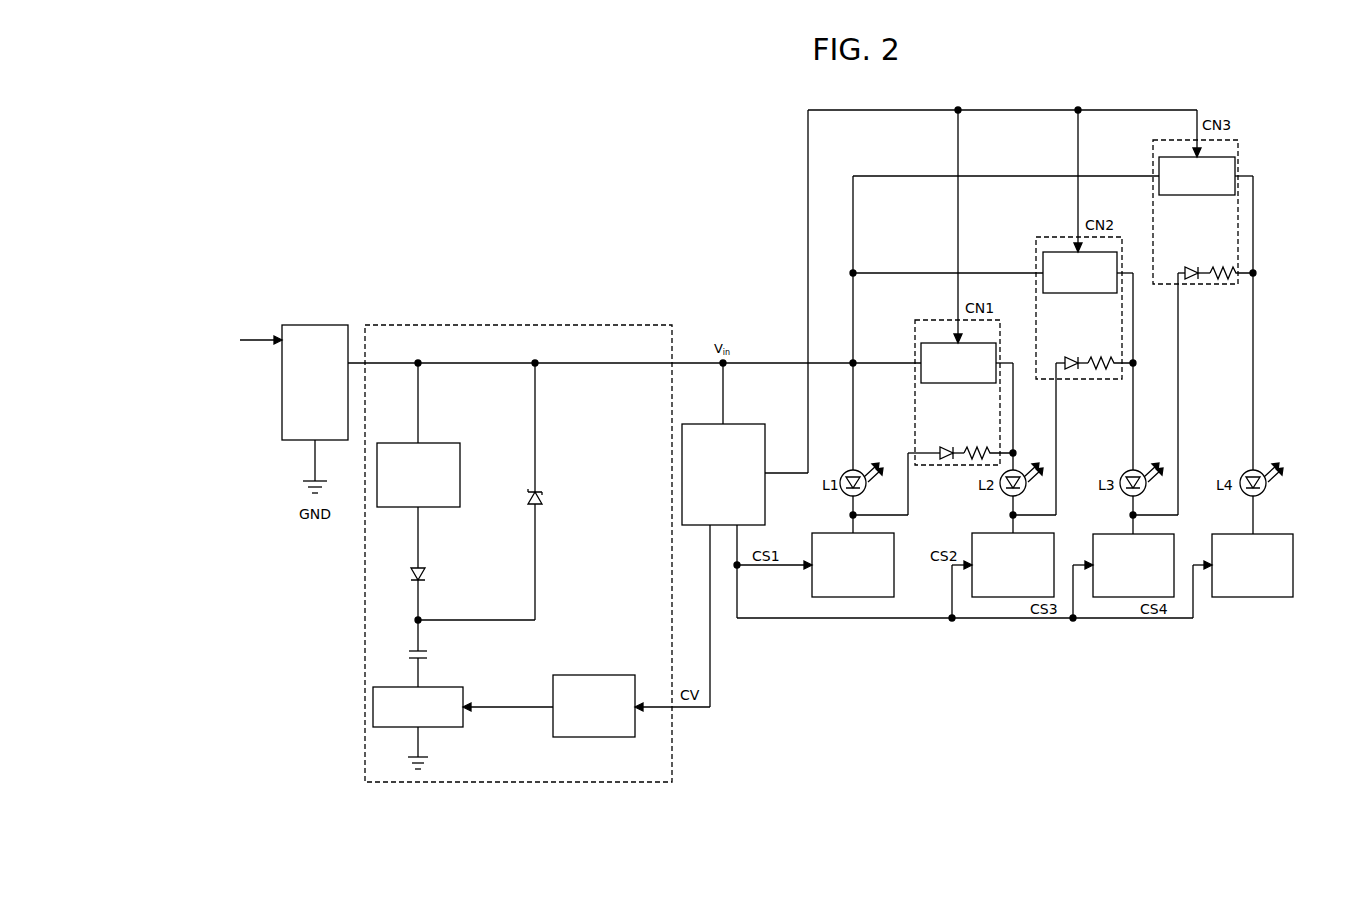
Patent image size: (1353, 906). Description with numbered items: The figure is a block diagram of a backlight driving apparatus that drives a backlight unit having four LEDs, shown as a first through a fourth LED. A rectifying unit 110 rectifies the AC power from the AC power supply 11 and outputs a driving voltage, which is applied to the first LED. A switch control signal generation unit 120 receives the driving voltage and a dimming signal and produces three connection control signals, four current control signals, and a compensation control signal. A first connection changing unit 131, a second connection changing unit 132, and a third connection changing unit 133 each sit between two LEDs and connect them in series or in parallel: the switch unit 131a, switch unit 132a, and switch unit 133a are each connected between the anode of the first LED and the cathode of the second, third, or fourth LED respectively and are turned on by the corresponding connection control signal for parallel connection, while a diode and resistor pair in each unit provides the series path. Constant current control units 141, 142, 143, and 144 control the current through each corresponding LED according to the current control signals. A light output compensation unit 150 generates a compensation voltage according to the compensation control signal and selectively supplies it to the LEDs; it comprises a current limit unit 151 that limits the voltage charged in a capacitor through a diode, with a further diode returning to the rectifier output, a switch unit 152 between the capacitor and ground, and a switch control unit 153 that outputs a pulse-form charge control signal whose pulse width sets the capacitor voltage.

The AC power supply 11 is at (219, 333).
The rectifying unit 110 is at (322, 324).
The switch control signal generation unit 120 is at (740, 423).
The first connection changing unit 131 is at (935, 318).
The switch unit 131a is at (946, 384).
The second connection changing unit 132 is at (1058, 237).
The switch unit 132a is at (1066, 294).
The third connection changing unit 133 is at (1153, 150).
The switch unit 133a is at (1235, 166).
The constant current control unit 141 is at (896, 556).
The constant current control unit 142 is at (1056, 557).
The constant current control unit 143 is at (1176, 557).
The constant current control unit 144 is at (1295, 557).
The light output compensation unit 150 is at (655, 324).
The current limit unit 151 is at (461, 455).
The switch unit 152 is at (466, 700).
The switch control unit 153 is at (637, 692).